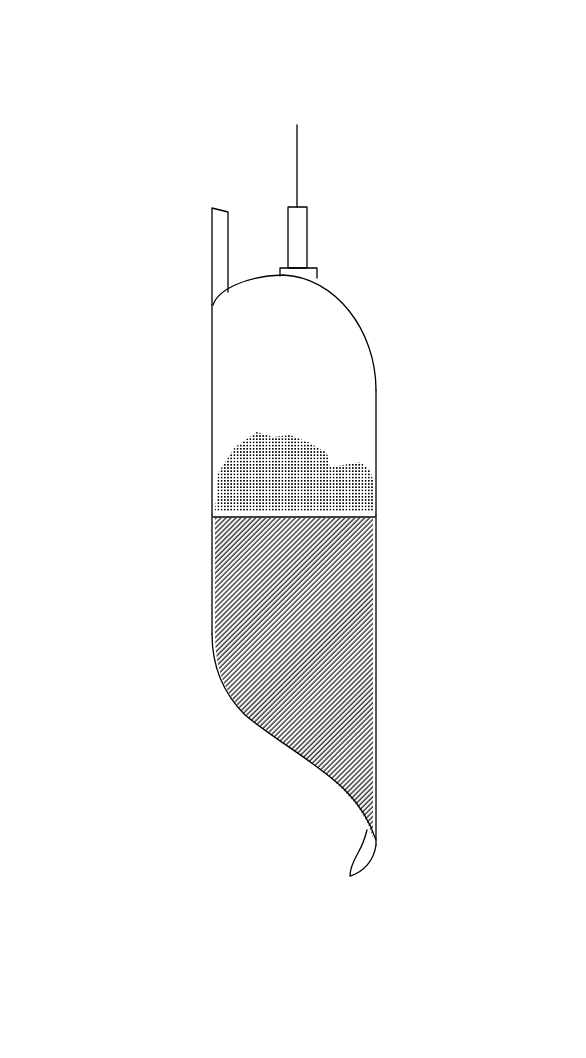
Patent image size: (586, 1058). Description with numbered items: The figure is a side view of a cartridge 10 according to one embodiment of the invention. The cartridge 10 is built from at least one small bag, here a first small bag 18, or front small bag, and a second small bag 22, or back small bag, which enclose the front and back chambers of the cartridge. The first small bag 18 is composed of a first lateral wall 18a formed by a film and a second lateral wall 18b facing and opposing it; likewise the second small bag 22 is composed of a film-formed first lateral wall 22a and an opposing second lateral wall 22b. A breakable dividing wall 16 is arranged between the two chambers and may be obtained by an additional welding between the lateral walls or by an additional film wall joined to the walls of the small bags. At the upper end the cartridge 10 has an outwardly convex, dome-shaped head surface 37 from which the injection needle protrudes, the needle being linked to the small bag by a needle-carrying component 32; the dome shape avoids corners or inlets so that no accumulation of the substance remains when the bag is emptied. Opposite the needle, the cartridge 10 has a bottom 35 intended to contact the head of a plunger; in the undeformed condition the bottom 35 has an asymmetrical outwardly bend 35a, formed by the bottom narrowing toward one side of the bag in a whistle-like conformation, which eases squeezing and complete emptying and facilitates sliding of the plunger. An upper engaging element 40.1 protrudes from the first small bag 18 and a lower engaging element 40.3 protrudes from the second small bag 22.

The cartridge 10 is at (505, 175).
The breakable dividing wall 16 is at (337, 513).
The first small bag 18 is at (110, 313).
The first lateral wall 18a is at (380, 403).
The second lateral wall 18b is at (212, 413).
The second small bag 22 is at (490, 520).
The first lateral wall 22a is at (380, 707).
The second lateral wall 22b is at (212, 555).
The needle-carrying component 32 is at (310, 247).
The bottom 35 is at (213, 688).
The outwardly bend 35a is at (277, 743).
The head surface 37 is at (373, 343).
The upper engaging element 40.1 is at (228, 247).
The lower engaging element 40.3 is at (352, 864).